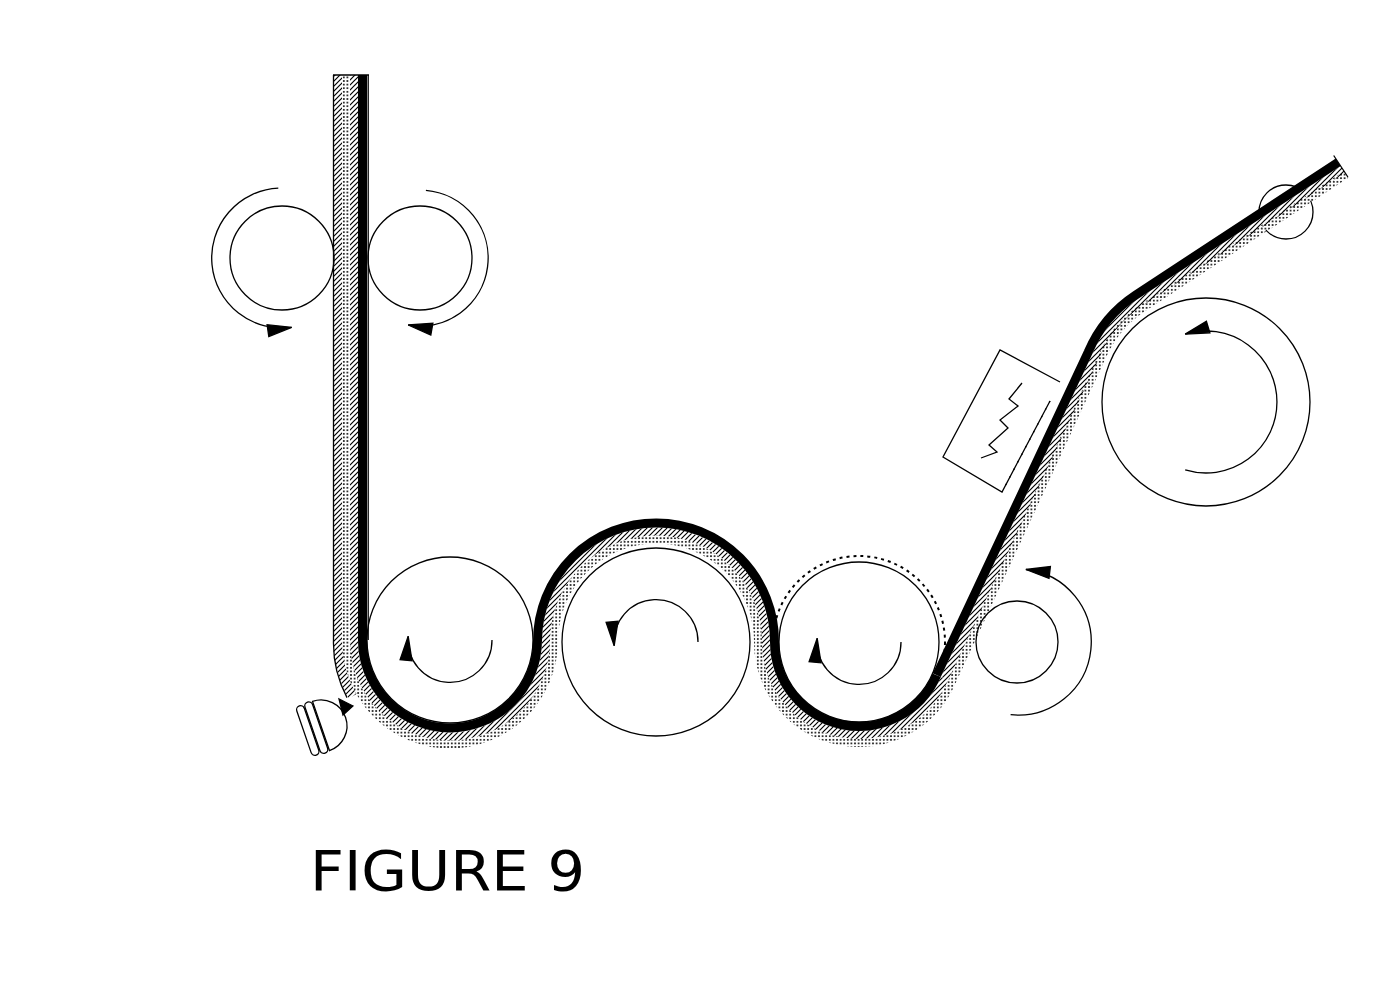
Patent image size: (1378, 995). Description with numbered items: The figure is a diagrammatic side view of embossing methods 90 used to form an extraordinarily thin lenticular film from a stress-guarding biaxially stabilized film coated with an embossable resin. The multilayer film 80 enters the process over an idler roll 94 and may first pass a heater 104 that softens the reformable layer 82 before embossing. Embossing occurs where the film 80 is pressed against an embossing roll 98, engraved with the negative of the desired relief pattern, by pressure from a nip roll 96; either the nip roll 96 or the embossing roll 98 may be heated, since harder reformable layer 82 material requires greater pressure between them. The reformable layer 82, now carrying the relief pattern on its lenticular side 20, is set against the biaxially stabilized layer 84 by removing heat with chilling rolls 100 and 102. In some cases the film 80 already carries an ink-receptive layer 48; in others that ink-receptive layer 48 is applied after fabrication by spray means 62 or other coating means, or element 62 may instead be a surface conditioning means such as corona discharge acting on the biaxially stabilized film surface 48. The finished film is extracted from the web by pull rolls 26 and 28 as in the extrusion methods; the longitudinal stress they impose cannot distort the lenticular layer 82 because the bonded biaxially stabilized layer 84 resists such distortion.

The lenticular side 20 is at (791, 462).
The pull roll 26 is at (420, 258).
The pull roll 28 is at (282, 258).
The ink-receptive layer 48 is at (333, 405).
The spray means 62 is at (299, 752).
The multilayer film 80 is at (1309, 178).
The reformable layer 82 is at (1165, 272).
The biaxially stabilized layer 84 is at (836, 752).
The embossing methods 90 is at (555, 375).
The idler roll 94 is at (1205, 402).
The nip roll 96 is at (1018, 643).
The embossing roll 98 is at (858, 640).
The chilling roll 100 is at (653, 646).
The chilling roll 102 is at (453, 640).
The heater 104 is at (1002, 408).